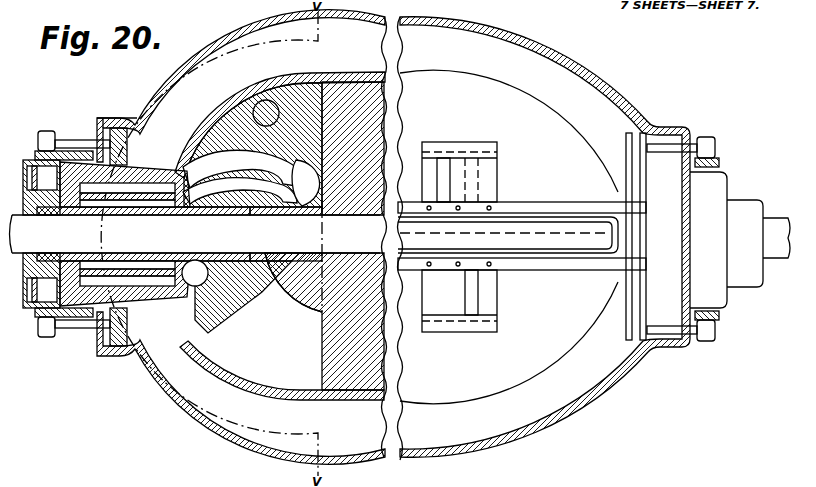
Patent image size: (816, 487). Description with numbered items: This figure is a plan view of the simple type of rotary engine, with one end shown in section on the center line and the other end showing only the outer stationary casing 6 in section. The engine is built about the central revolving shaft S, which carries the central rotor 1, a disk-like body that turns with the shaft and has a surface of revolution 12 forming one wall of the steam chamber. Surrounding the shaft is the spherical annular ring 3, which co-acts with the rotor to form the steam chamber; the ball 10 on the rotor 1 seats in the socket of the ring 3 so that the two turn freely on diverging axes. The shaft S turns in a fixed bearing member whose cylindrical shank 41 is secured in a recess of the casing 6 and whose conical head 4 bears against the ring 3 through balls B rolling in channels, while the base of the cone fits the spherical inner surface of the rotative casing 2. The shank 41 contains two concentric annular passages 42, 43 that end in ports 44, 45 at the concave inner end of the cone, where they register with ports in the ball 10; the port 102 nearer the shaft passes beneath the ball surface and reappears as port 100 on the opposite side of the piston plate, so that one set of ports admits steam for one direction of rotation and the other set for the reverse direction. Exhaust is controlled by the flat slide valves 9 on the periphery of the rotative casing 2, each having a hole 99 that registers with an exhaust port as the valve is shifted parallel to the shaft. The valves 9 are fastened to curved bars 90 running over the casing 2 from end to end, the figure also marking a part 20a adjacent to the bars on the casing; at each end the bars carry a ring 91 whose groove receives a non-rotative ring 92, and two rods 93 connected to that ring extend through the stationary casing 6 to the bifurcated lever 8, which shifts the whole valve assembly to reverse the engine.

The central rotor 1 is at (328, 348).
The rotative casing 2 is at (263, 100).
The spherical annular ring 3 is at (296, 92).
The fixed bearing member head 4 is at (109, 201).
The stationary frame casing 6 is at (363, 20).
The bifurcated lever 8 is at (36, 160).
The exhaust valve 9 is at (459, 237).
The ball 10 is at (312, 308).
The surface of revolution 12 is at (321, 371).
The tube 20a is at (580, 228).
The cylindrical shank 41 is at (188, 284).
The annular passage 42 is at (105, 190).
The annular passage 43 is at (137, 200).
The port 44 is at (241, 169).
The port 45 is at (240, 191).
The curved bar 90 is at (544, 212).
The ring 91 is at (145, 152).
The non-rotative ring 92 is at (112, 118).
The rod 93 is at (75, 140).
The valve port 99 is at (478, 296).
The port 100 is at (304, 183).
The port 102 is at (256, 208).
The ball B is at (237, 77).
The central revolving shaft S is at (195, 234).